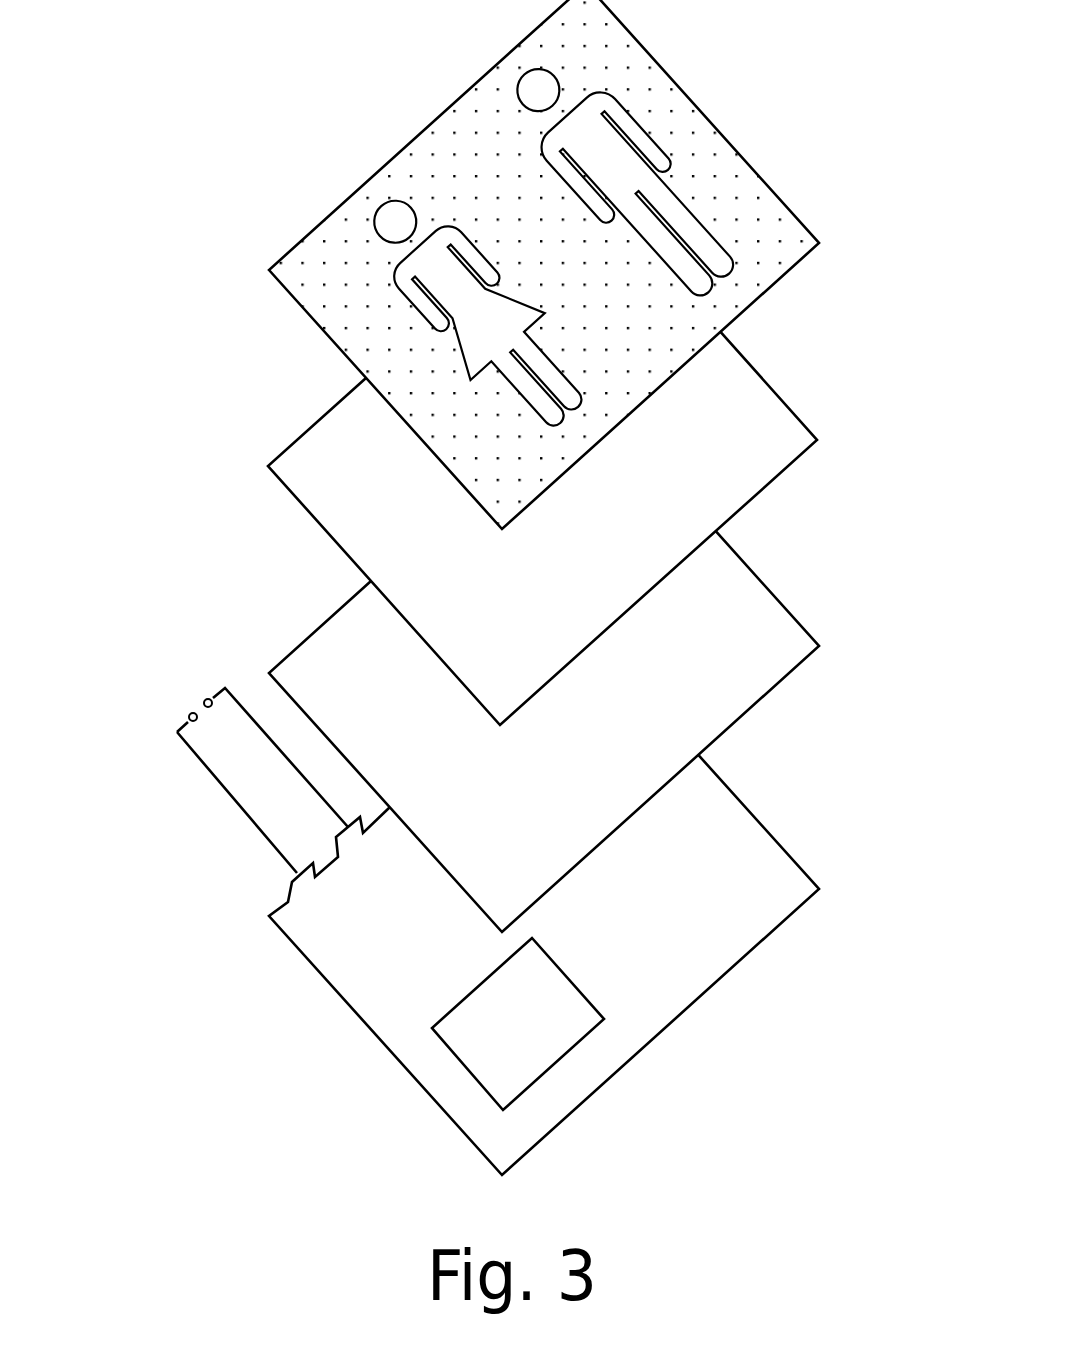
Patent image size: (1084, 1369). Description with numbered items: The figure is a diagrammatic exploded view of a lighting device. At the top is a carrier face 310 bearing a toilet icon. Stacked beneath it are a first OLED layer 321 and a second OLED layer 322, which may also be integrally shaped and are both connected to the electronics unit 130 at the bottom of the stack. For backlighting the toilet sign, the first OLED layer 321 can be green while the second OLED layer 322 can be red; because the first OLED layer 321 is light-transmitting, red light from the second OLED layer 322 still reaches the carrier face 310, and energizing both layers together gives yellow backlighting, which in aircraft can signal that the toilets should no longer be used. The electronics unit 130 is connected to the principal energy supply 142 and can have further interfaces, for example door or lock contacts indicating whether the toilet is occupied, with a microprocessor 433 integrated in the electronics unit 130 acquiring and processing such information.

The carrier face 310 is at (805, 225).
The first OLED layer 321 is at (794, 414).
The second OLED layer 322 is at (779, 603).
The electronics unit 130 is at (771, 836).
The microprocessor 433 is at (579, 991).
The principal energy supply 142 is at (186, 692).